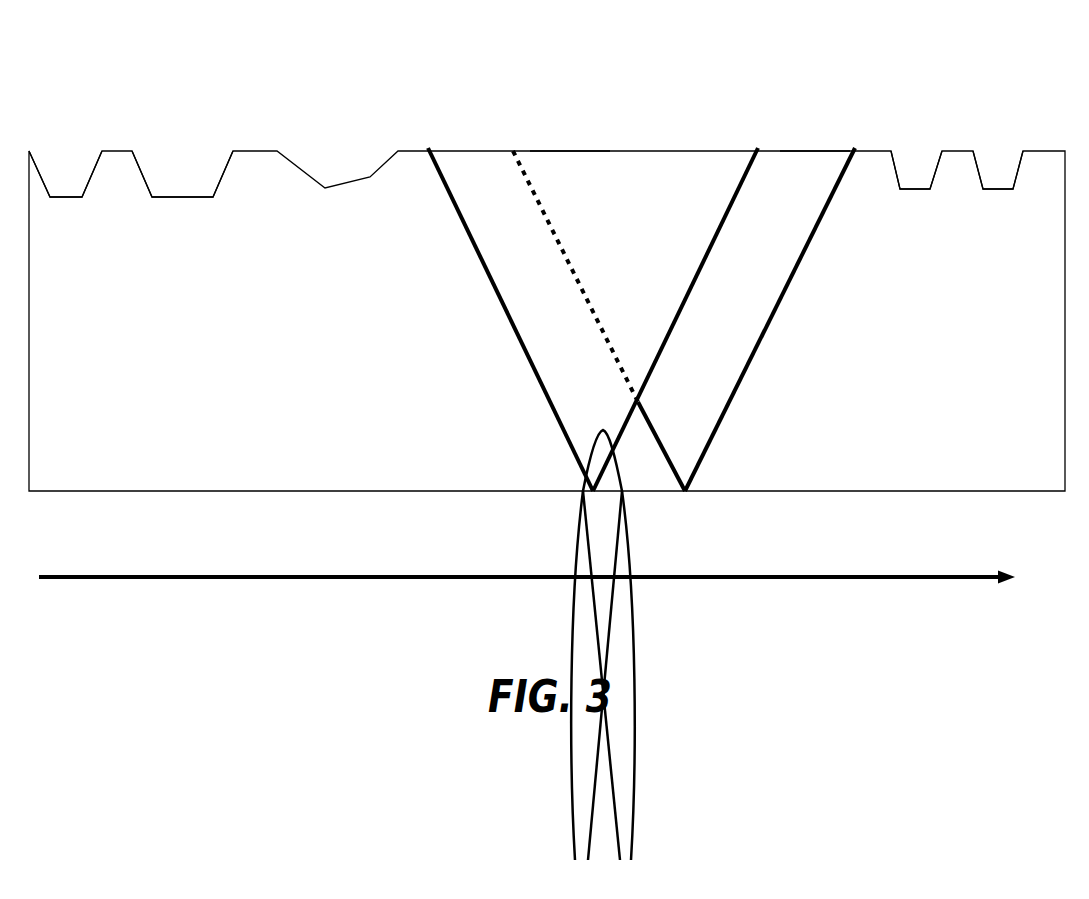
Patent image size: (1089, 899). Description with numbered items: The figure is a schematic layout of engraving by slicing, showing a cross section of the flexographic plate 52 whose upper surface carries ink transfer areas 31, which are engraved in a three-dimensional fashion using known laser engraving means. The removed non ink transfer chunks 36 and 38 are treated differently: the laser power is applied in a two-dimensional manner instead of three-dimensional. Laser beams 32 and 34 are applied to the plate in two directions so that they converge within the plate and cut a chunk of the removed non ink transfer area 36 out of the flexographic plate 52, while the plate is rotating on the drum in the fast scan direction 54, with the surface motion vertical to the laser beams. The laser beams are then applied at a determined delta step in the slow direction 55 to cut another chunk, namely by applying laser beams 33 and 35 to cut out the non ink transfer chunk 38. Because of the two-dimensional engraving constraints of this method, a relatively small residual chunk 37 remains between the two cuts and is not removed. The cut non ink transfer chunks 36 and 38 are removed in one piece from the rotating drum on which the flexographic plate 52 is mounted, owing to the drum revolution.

The ink transfer areas 31 is at (177, 197).
The laser beam 32 is at (424, 139).
The laser beam 33 is at (509, 139).
The laser beam 34 is at (762, 139).
The laser beam 35 is at (859, 139).
The removed non ink transfer chunk 36 is at (563, 151).
The residual non ink transfer area 37 is at (650, 491).
The removed non ink transfer chunk 38 is at (813, 151).
The flexographic plate 52 is at (303, 362).
The fast scan direction 54 is at (578, 530).
The slow scan direction 55 is at (100, 578).